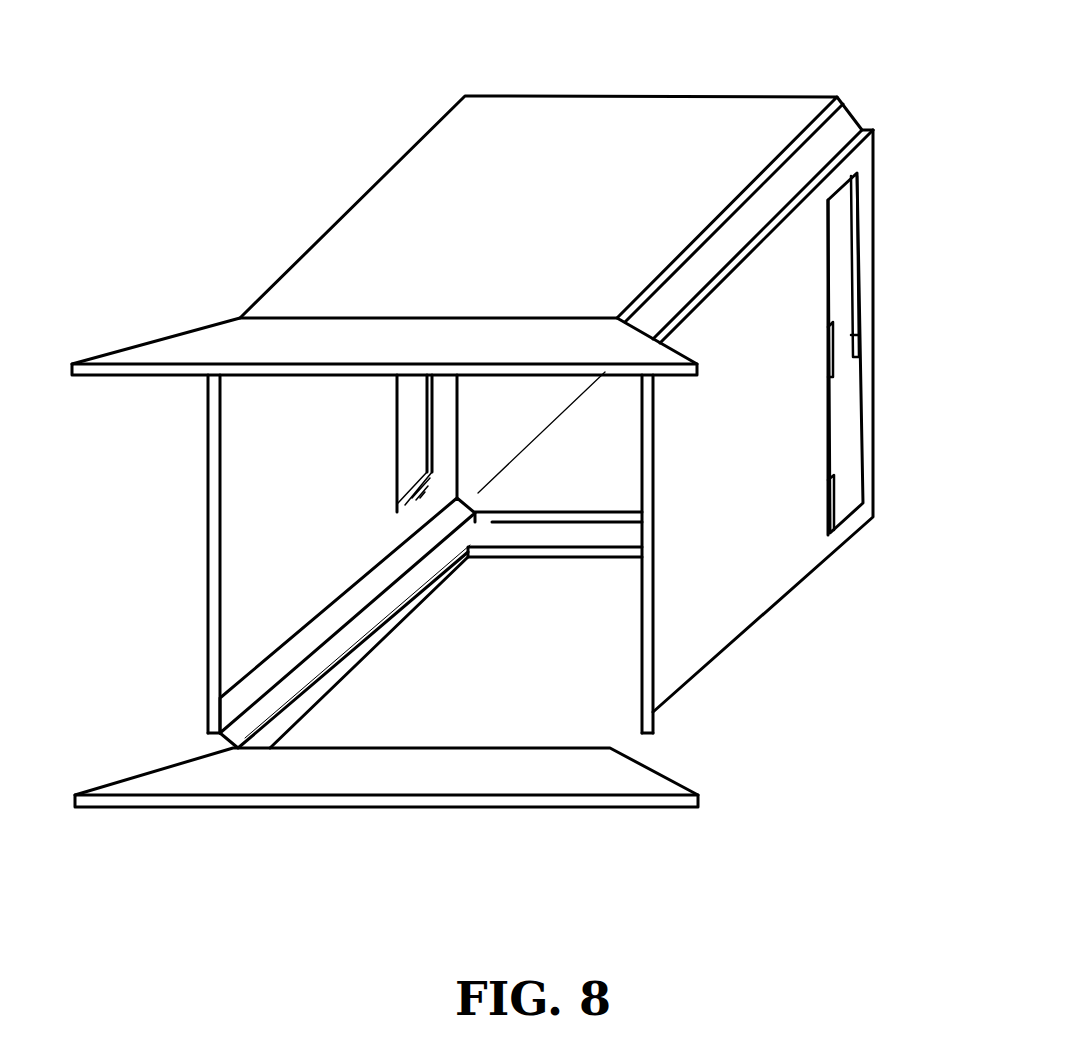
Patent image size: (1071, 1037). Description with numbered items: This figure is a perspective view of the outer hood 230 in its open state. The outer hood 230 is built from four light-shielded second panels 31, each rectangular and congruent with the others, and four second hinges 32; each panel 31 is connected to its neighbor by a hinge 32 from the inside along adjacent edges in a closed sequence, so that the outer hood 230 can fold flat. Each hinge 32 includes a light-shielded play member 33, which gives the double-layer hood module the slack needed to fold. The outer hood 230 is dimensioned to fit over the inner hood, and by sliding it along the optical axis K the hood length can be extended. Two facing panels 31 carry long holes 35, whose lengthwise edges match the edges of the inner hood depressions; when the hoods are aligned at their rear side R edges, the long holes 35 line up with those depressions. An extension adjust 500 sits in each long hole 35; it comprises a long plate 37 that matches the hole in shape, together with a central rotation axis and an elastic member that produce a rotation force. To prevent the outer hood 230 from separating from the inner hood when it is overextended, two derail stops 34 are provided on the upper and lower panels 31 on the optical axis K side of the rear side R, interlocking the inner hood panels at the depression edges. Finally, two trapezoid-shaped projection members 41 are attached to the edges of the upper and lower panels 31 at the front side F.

The outer hood 230 is at (295, 190).
The second panel 31 is at (657, 155).
The second hinge 32 is at (285, 648).
The play member 33 is at (845, 100).
The derail stop 34 is at (620, 555).
The long hole 35 is at (858, 190).
The long plate 37 is at (413, 392).
The projection member 41 is at (122, 360).
The extension adjust 500 is at (455, 411).
The optical axis K is at (535, 433).
The rear side R is at (847, 120).
The front side F is at (232, 750).